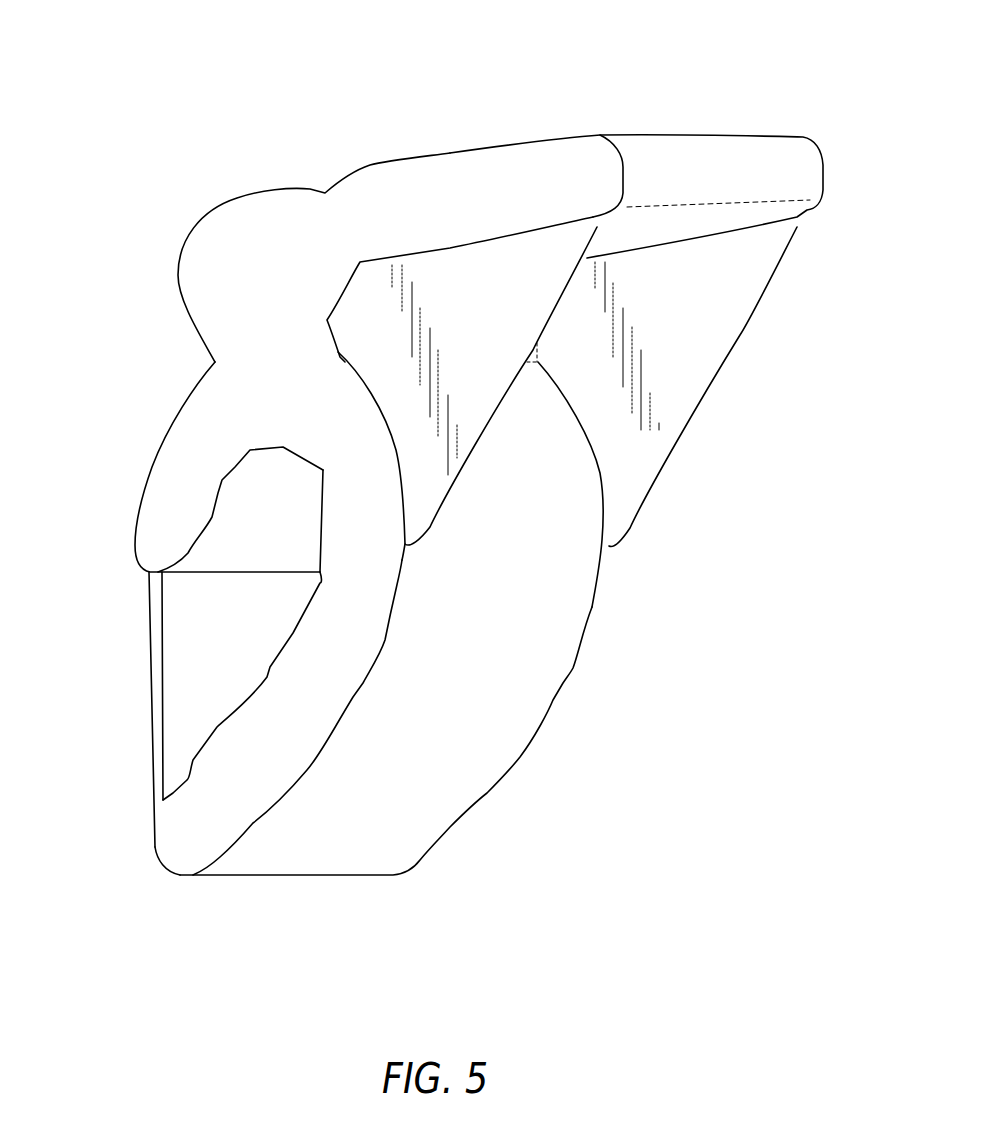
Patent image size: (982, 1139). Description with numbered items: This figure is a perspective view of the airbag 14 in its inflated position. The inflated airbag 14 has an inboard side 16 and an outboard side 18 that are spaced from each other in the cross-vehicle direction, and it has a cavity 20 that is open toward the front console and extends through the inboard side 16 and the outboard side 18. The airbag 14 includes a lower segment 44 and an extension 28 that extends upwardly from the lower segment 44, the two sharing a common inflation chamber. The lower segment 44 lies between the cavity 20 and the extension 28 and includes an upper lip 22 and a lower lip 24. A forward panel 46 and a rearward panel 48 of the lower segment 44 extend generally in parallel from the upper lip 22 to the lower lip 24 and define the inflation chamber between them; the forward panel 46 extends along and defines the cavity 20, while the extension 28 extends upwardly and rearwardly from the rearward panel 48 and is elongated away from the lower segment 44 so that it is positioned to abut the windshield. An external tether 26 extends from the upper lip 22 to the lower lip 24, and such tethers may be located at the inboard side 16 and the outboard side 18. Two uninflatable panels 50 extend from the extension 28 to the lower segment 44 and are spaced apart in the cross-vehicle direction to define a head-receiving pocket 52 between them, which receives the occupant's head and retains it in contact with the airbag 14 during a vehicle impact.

The airbag 14 is at (327, 102).
The inboard side 16 is at (613, 677).
The outboard side 18 is at (117, 533).
The cavity 20 is at (205, 695).
The upper lip 22 is at (188, 455).
The lower lip 24 is at (187, 843).
The external tether 26 is at (152, 677).
The extension 28 is at (723, 170).
The lower segment 44 is at (458, 830).
The forward panel 46 is at (287, 635).
The rearward panel 48 is at (450, 763).
The uninflatable panel 50 is at (503, 283).
The head-receiving pocket 52 is at (540, 442).